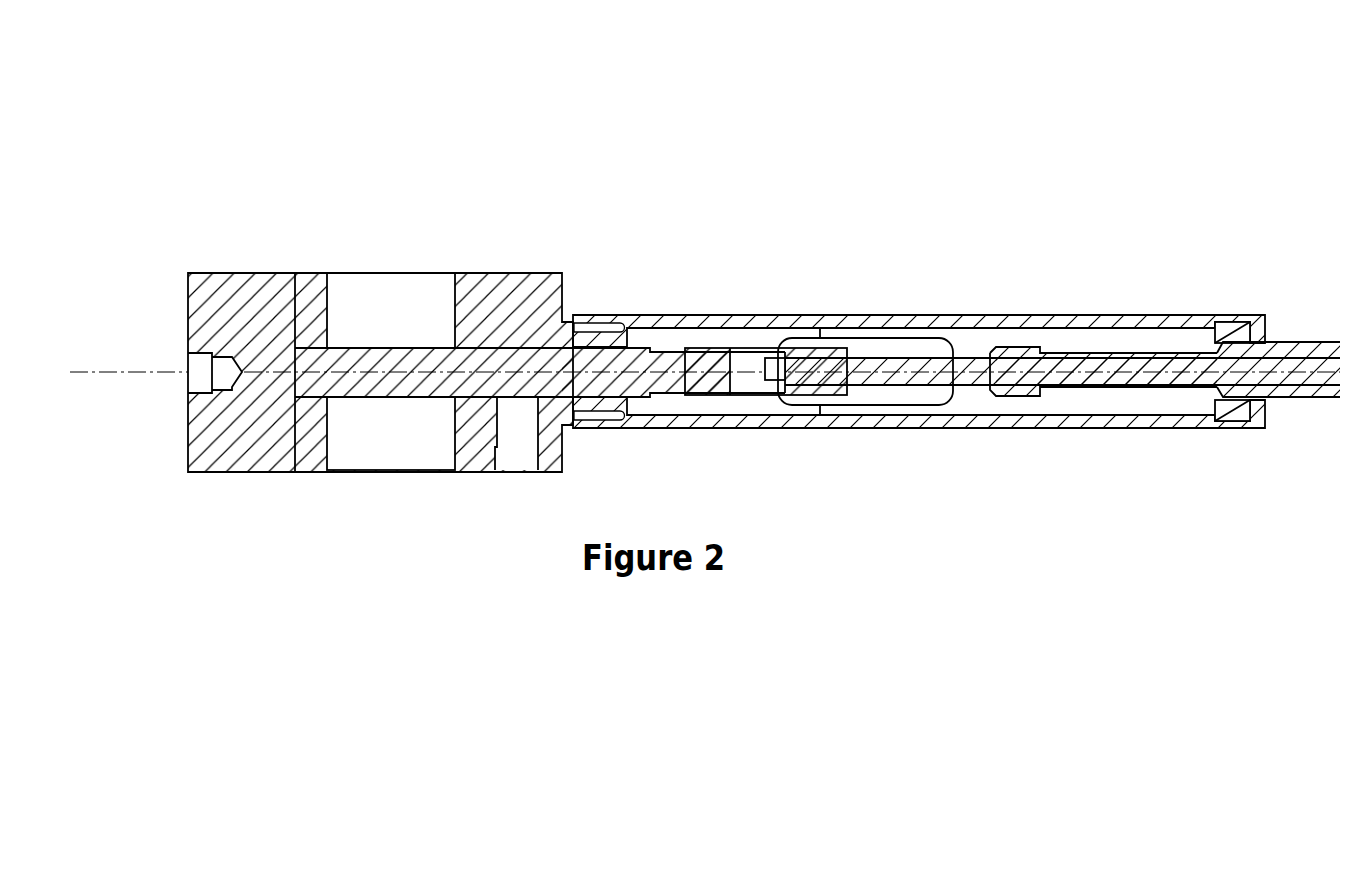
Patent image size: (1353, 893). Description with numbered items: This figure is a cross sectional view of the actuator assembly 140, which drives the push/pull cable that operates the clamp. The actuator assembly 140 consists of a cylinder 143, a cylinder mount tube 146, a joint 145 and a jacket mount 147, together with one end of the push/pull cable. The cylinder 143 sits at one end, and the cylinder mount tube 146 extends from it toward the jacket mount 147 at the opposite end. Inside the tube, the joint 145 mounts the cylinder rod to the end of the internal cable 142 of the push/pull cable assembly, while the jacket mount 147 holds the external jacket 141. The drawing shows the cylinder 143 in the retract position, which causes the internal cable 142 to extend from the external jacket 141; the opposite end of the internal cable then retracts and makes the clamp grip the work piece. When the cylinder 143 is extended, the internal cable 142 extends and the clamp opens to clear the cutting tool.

The actuator assembly 140 is at (523, 183).
The external jacket 141 is at (1040, 347).
The internal cable 142 is at (963, 358).
The cylinder 143 is at (522, 270).
The joint 145 is at (743, 345).
The cylinder mount tube 146 is at (700, 312).
The jacket mount 147 is at (1312, 342).